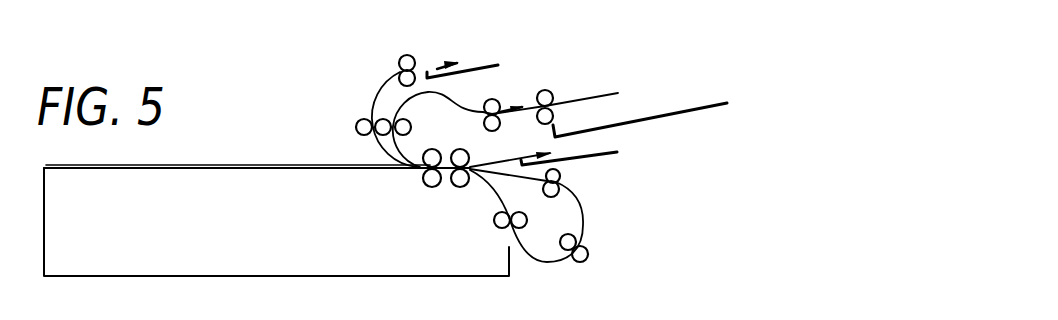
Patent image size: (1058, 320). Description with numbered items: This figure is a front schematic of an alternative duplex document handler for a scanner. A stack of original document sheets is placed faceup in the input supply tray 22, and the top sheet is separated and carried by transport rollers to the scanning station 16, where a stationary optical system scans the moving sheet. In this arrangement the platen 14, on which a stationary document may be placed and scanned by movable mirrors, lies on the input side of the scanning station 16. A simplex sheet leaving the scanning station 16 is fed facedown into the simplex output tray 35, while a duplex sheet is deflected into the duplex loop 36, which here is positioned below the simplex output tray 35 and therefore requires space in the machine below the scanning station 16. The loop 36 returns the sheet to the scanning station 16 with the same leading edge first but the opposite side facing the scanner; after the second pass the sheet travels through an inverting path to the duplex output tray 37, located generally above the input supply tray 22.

The platen 14 is at (254, 172).
The scanning station 16 is at (445, 184).
The input supply tray 22 is at (643, 120).
The simplex output tray 35 is at (607, 152).
The duplex loop 36 is at (575, 217).
The duplex output tray 37 is at (484, 66).